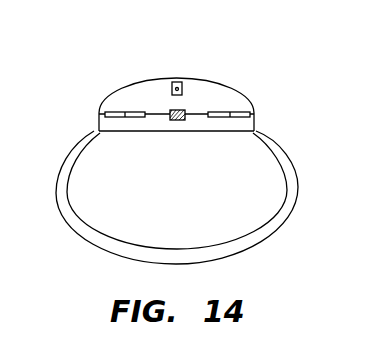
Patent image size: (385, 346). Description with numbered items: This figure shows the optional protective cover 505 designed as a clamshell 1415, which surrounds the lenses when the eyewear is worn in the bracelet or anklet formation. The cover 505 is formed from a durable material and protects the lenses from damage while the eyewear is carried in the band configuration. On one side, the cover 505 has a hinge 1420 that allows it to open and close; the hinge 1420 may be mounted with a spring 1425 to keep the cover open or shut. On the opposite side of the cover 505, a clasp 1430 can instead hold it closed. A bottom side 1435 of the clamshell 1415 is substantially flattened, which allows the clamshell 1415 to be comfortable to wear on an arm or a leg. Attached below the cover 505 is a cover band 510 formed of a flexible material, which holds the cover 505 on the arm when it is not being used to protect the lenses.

The clamshell 1415 is at (104, 76).
The cover 505 is at (223, 98).
The hinge 1420 is at (238, 115).
The clasp 1430 is at (176, 82).
The spring 1425 is at (175, 122).
The bottom side 1435 is at (226, 131).
The cover band 510 is at (290, 198).